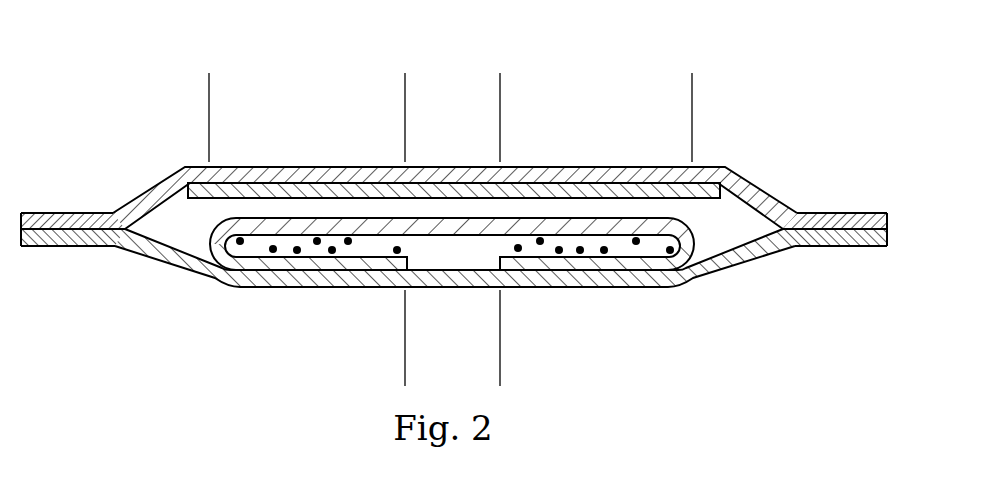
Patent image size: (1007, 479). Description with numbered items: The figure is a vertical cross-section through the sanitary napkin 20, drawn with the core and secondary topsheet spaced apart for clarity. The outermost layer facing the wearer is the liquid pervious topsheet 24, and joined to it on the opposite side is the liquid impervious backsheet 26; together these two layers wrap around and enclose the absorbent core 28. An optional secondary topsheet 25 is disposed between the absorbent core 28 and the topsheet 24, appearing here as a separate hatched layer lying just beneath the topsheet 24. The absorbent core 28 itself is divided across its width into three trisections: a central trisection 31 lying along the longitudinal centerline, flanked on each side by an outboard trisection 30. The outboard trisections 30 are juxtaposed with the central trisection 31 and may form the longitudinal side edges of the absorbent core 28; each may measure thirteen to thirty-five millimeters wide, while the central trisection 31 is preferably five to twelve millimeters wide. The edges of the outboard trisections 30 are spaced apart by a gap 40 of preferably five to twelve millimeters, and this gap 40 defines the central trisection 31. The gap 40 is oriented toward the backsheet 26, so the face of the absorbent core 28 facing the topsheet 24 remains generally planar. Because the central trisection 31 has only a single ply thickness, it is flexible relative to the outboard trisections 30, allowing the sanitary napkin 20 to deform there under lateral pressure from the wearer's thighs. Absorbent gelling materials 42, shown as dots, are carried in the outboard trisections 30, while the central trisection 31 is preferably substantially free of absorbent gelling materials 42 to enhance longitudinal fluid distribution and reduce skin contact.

The sanitary napkin 20 is at (190, 354).
The liquid pervious topsheet 24 is at (750, 193).
The secondary topsheet 25 is at (693, 183).
The liquid impervious backsheet 26 is at (653, 278).
The absorbent core 28 is at (373, 265).
The outboard trisections 30 is at (405, 93).
The central trisection 31 is at (500, 93).
The gap 40 is at (405, 378).
The absorbent gelling materials 42 is at (273, 251).